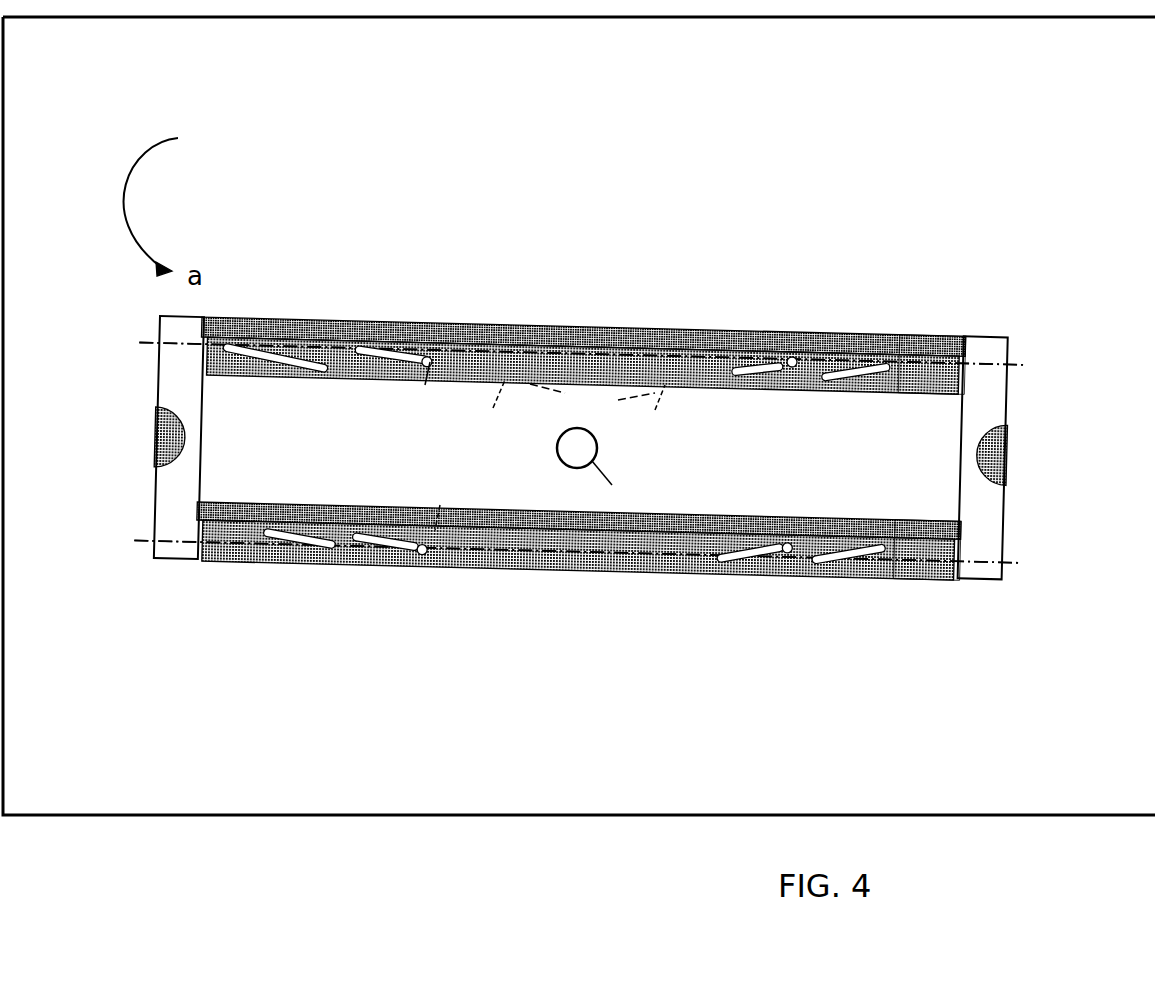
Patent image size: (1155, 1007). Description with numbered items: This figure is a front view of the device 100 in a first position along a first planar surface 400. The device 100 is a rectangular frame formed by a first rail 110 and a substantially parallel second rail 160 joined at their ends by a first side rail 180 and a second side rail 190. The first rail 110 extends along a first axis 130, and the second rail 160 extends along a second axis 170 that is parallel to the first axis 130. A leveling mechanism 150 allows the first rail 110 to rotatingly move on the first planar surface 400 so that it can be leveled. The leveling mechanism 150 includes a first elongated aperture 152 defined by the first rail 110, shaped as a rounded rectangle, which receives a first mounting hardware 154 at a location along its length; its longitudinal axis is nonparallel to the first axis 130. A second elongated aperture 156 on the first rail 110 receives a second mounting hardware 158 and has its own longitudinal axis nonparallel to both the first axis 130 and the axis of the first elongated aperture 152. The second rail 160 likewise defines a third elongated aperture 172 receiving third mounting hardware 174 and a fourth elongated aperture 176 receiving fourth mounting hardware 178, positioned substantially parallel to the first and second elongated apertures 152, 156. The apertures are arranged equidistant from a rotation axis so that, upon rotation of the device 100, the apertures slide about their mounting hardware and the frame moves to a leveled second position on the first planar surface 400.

The device 100 is at (880, 250).
The first rail 110 is at (513, 375).
The first axis 130 is at (918, 368).
The leveling mechanism 150 is at (760, 350).
The first elongated aperture 152 is at (392, 332).
The first mounting hardware 154 is at (430, 340).
The second elongated aperture 156 is at (772, 370).
The second mounting hardware 158 is at (790, 358).
The second rail 160 is at (660, 572).
The second axis 170 is at (921, 557).
The third elongated aperture 172 is at (392, 548).
The third mounting hardware 174 is at (427, 555).
The fourth elongated aperture 176 is at (765, 560).
The fourth mounting hardware 178 is at (800, 540).
The first side rail 180 is at (993, 517).
The second side rail 190 is at (172, 487).
The first planar surface 400 is at (1063, 813).